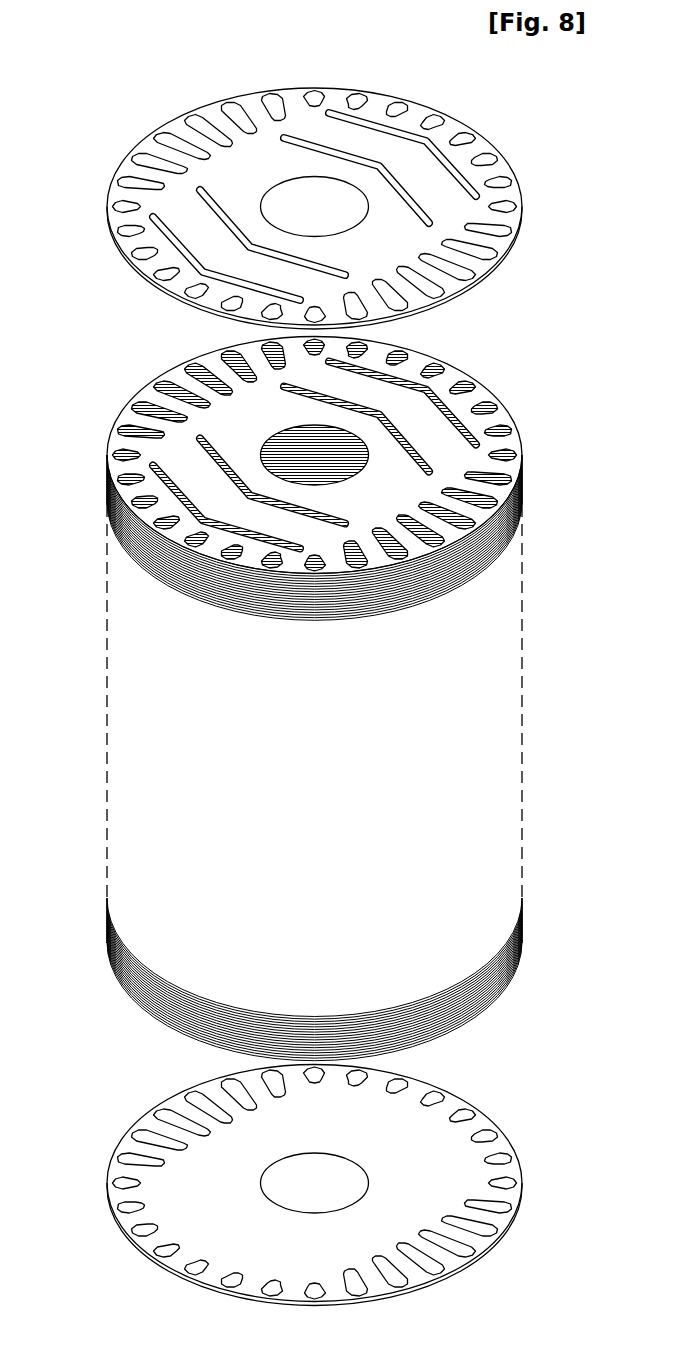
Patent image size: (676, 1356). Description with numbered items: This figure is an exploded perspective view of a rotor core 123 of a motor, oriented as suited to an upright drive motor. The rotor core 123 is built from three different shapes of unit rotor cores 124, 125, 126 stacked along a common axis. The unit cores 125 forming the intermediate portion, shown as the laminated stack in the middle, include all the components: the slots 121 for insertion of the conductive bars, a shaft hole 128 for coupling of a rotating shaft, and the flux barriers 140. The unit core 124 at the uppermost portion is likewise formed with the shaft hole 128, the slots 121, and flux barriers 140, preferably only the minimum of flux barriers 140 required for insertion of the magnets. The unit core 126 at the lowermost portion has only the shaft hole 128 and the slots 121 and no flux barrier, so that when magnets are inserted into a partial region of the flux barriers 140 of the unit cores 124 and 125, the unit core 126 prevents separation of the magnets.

The slot 121 is at (500, 227).
The rotor core 123 is at (493, 388).
The unit core 124 is at (508, 157).
The unit core 125 is at (205, 416).
The unit core 126 is at (454, 1137).
The shaft hole 128 is at (268, 192).
The flux barrier 140 is at (180, 249).